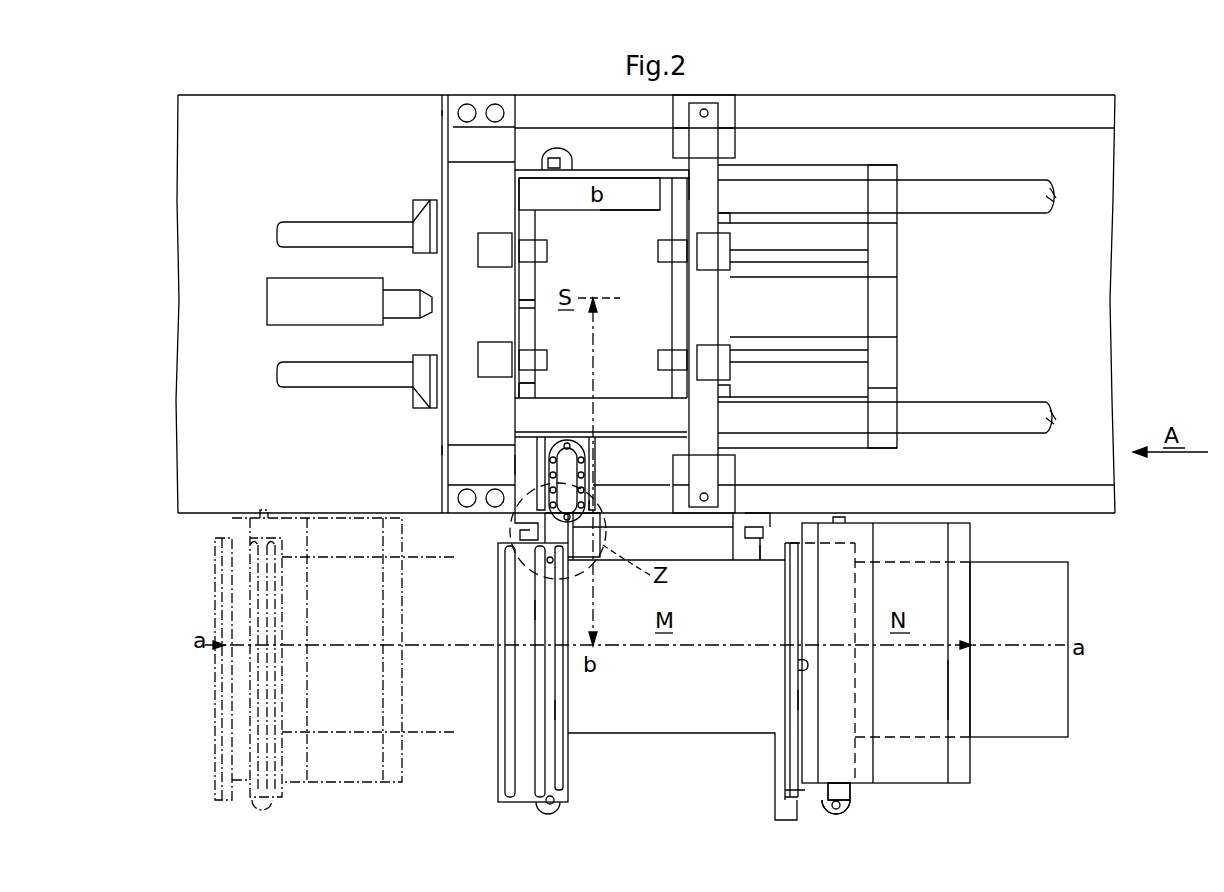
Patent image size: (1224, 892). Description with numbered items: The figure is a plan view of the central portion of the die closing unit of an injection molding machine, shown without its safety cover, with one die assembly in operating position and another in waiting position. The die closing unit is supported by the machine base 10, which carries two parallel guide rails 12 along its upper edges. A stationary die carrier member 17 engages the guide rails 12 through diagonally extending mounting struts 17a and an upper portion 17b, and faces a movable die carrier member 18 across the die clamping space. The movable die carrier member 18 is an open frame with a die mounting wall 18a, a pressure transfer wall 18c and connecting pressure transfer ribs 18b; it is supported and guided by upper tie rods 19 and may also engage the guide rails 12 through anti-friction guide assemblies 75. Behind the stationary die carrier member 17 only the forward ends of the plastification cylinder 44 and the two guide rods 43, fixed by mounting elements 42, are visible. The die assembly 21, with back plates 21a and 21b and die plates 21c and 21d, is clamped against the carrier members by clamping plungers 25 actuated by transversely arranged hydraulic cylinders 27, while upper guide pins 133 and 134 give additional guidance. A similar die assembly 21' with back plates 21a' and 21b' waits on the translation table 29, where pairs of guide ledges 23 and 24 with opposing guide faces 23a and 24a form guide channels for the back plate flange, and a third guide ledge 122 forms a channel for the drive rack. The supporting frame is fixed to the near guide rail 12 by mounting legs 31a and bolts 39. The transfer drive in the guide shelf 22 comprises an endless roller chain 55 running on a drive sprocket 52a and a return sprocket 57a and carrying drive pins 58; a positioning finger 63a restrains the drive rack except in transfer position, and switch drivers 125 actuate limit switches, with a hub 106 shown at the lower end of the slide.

The machine base 10 is at (1122, 207).
The guide rails 12 is at (1095, 113).
The stationary die carrier member 17 is at (440, 427).
The mounting struts 17a is at (444, 450).
The column upper part 17b is at (442, 113).
The movable die carrier member 18 is at (862, 313).
The die mounting wall 18a is at (705, 190).
The pressure transfer ribs 18b is at (828, 258).
The pressure transfer wall 18c is at (885, 215).
The upper tie rods 19 is at (1006, 420).
The die assembly 21 is at (571, 303).
The back plate 21a is at (486, 400).
The back plate 21b is at (603, 352).
The die plate 21c is at (530, 235).
The die plate 21d is at (635, 235).
The guide shelf 22 is at (520, 463).
The guide ledges 23 is at (535, 775).
The guide faces 23a is at (536, 620).
The guide ledges 24 is at (790, 628).
The guide faces 24a is at (800, 664).
The clamping plungers 25 is at (670, 253).
The hydraulic cylinders 27 is at (495, 245).
The translation table 29 is at (1070, 585).
The mounting legs 31a is at (762, 520).
The bolts 39 is at (761, 548).
The mounting elements 42 is at (432, 208).
The guide rods 43 is at (312, 230).
The plastification cylinder 44 is at (290, 297).
The drive sprocket 52a is at (584, 462).
The endless roller chain 55 is at (596, 562).
The return sprocket 57a is at (540, 535).
The drive pins 58 is at (590, 507).
The positioning finger 63a is at (548, 560).
The anti-friction guide assemblies 75 is at (730, 138).
The hub 106 is at (842, 797).
The third guide ledge 122 is at (565, 710).
The switch drivers 125 is at (560, 158).
The upper guide pin 133 is at (530, 305).
The upper guide pin 134 is at (560, 375).
The die assembly 21' is at (595, 660).
The back plate 21a' is at (750, 704).
The back plate 21b' is at (1000, 690).